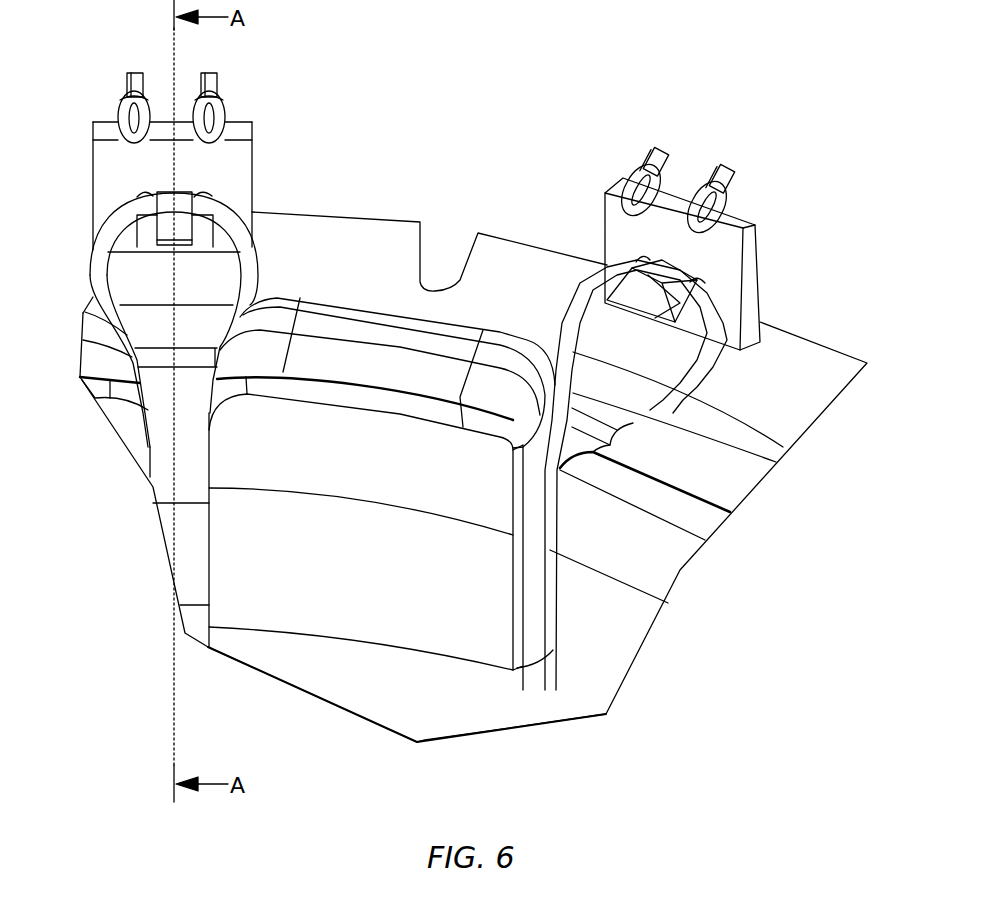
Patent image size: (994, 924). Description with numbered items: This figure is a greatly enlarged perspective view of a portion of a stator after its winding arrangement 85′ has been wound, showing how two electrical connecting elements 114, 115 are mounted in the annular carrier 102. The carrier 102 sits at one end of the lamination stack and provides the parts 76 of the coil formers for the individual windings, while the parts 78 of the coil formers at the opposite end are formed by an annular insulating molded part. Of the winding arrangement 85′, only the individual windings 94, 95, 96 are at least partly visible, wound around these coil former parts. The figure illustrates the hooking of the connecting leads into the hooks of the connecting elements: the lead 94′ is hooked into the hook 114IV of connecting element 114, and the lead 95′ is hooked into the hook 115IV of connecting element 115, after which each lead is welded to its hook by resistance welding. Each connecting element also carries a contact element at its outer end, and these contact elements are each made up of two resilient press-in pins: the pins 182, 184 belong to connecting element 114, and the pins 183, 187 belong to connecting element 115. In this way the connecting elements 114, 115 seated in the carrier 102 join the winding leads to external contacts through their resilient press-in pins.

The resilient press-in pin 184 is at (130, 72).
The resilient press-in pin 182 is at (213, 68).
The hook 114IV is at (184, 197).
The connecting element 114 is at (237, 172).
The lead 94′ is at (248, 258).
The individual winding 94 is at (102, 360).
The individual winding 95 is at (417, 343).
The parts of the coil formers 76 is at (381, 565).
The parts of the coil formers 78 is at (456, 606).
The resilient press-in pin 187 is at (652, 143).
The resilient press-in pin 183 is at (717, 158).
The hook 115IV is at (604, 267).
The connecting element 115 is at (733, 272).
The lead 95′ is at (695, 380).
The carrier 102 is at (800, 420).
The winding arrangement 85′ is at (805, 498).
The individual winding 96 is at (735, 492).